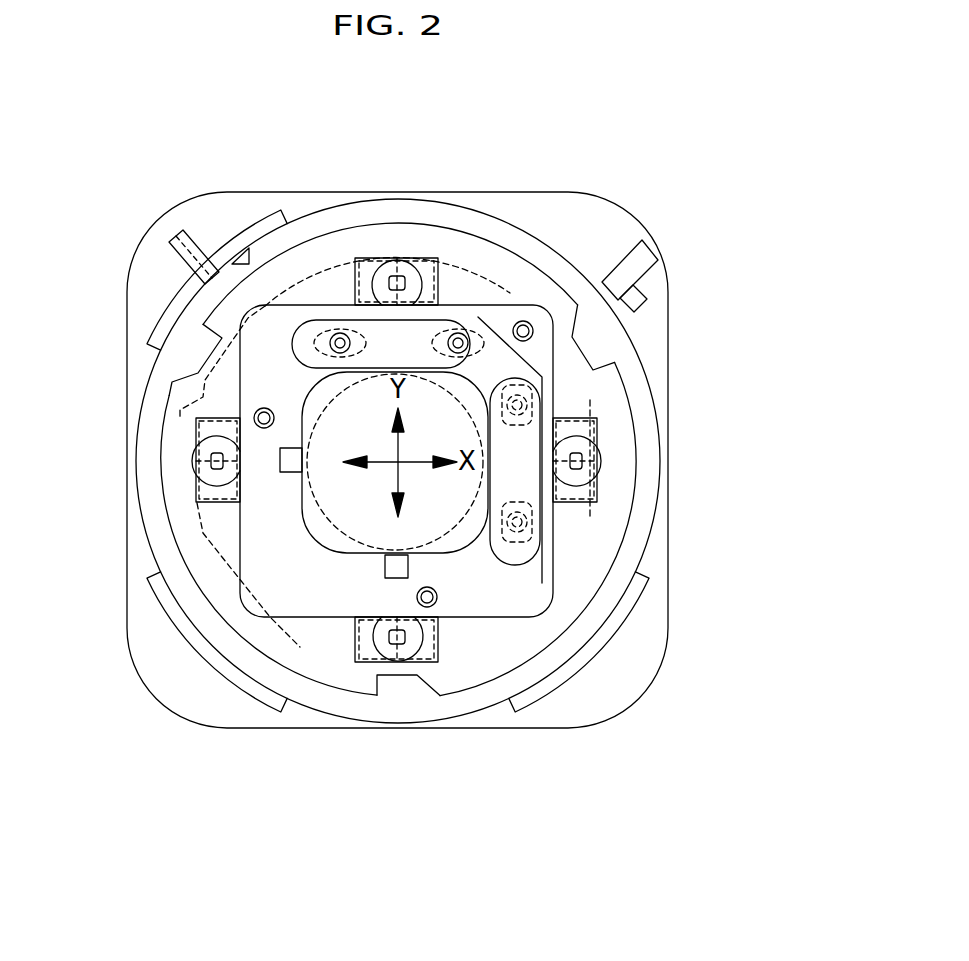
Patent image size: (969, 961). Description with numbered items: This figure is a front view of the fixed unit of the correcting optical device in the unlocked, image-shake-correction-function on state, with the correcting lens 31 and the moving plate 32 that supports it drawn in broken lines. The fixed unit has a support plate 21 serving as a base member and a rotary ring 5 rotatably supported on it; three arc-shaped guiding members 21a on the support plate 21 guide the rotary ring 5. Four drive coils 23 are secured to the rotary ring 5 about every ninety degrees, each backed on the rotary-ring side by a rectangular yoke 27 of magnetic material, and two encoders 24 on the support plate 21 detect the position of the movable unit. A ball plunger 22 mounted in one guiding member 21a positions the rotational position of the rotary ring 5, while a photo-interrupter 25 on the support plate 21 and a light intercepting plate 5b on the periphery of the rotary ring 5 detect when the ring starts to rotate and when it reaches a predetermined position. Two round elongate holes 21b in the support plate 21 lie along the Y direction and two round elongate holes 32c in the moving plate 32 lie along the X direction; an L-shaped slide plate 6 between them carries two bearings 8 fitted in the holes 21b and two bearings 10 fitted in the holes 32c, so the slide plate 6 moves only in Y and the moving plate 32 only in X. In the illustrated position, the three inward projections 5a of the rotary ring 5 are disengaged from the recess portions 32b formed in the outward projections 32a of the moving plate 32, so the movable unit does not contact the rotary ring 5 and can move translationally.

The rotary ring 5 is at (433, 213).
The projection 5a is at (395, 683).
The light intercepting plate 5b is at (615, 310).
The slide plate 6 is at (530, 455).
The bearing 8 is at (545, 400).
The bearing 10 is at (337, 333).
The support plate 21 is at (600, 220).
The arc-shaped guiding member 21a is at (243, 240).
The round elongate hole 21b is at (547, 377).
The ball plunger 22 is at (188, 255).
The drive coil 23 is at (390, 272).
The encoder 24 is at (390, 572).
The photo-interrupter 25 is at (642, 257).
The yoke 27 is at (435, 280).
The correcting lens 31 is at (280, 556).
The moving plate 32 is at (218, 596).
The projection 32a is at (560, 283).
The recess portion 32b is at (603, 253).
The round elongate hole 32c is at (293, 287).